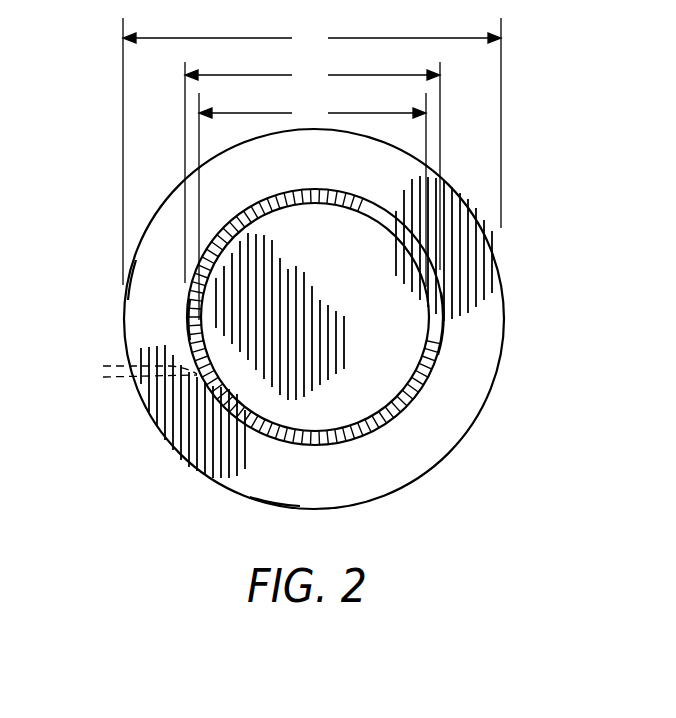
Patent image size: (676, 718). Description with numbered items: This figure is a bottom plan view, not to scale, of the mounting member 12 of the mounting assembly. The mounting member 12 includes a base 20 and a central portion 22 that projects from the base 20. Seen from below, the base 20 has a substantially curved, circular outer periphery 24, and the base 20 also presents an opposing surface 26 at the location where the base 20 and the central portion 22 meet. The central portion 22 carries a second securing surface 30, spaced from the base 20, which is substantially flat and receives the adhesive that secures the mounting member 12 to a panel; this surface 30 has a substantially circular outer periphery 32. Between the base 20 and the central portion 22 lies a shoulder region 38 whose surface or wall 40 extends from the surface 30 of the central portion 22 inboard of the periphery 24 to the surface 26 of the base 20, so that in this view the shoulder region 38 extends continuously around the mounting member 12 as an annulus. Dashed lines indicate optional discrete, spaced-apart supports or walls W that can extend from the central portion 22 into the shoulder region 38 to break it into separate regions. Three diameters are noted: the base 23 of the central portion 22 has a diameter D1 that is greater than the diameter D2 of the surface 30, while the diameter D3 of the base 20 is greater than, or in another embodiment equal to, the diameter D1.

The mounting member 12 is at (483, 417).
The base 20 is at (140, 298).
The central portion 22 is at (380, 388).
The base of the central portion 23 is at (445, 320).
The outer periphery 24 is at (170, 440).
The opposing surface 26 is at (277, 478).
The second securing surface 30 is at (388, 302).
The outer periphery of surface 32 is at (430, 332).
The shoulder region 38 is at (190, 322).
The wall 40 is at (368, 433).
The supports or walls W is at (137, 368).
The diameter of base of central portion D1 is at (312, 172).
The diameter of surface D2 is at (312, 206).
The diameter of base D3 is at (312, 151).